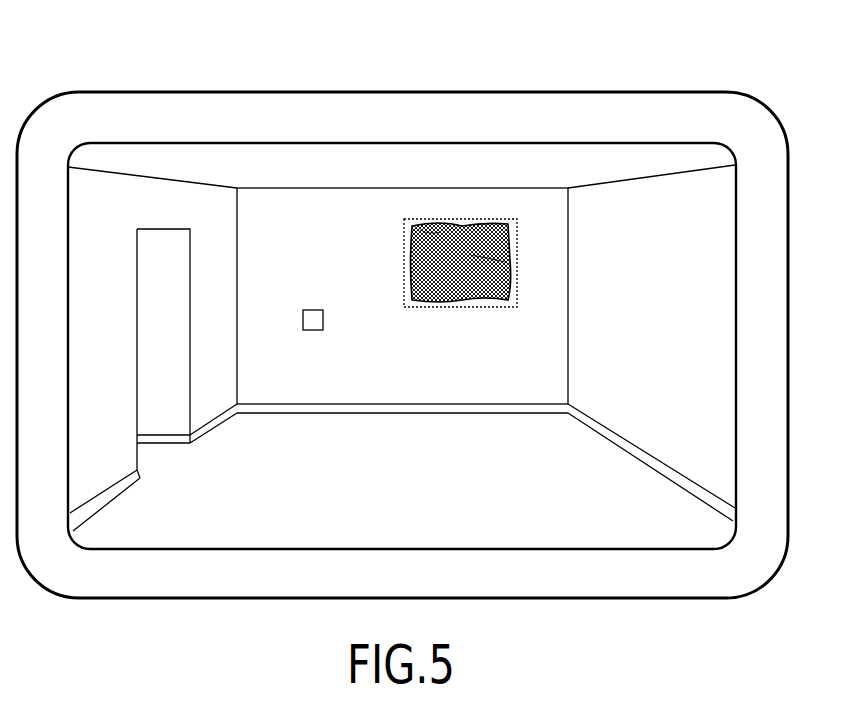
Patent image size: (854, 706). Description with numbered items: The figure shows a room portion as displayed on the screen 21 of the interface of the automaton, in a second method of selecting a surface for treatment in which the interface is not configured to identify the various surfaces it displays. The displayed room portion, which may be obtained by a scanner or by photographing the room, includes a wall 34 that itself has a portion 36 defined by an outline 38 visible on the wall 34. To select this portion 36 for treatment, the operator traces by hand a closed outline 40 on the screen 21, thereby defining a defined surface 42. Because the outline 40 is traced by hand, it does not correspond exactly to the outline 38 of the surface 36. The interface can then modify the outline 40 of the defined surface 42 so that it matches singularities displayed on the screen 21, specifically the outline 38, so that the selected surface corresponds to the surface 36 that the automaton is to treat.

The screen 21 is at (163, 92).
The wall 34 is at (341, 264).
The portion of the wall 36 is at (468, 302).
The outline 38 is at (430, 308).
The closed outline 40 is at (430, 232).
The defined surface 42 is at (504, 262).